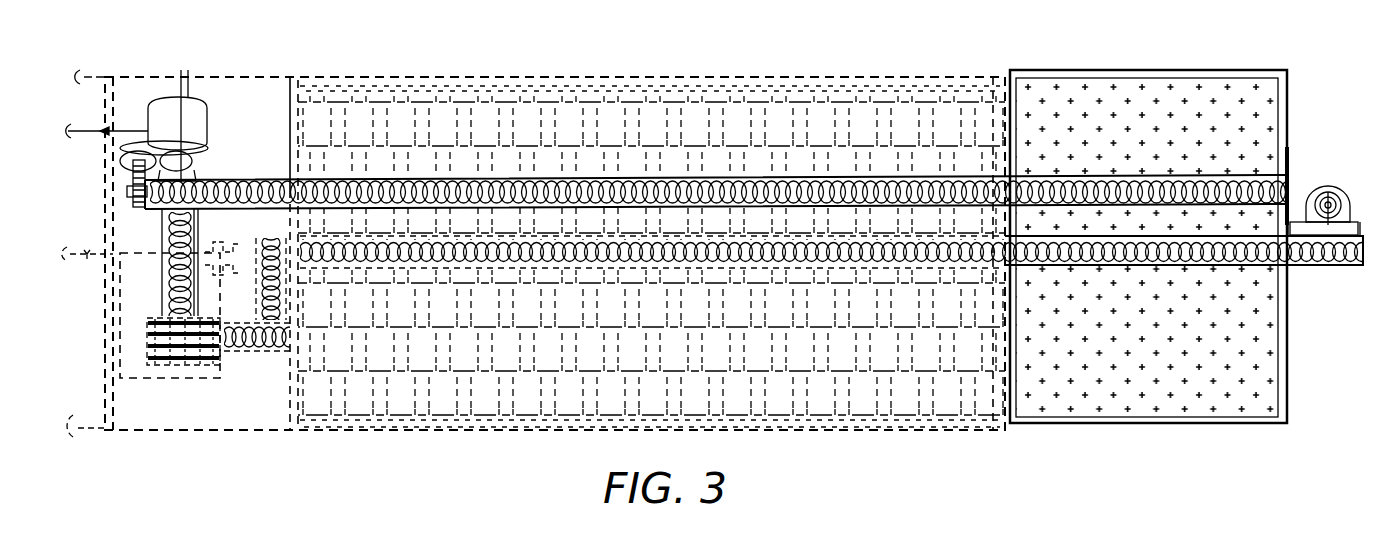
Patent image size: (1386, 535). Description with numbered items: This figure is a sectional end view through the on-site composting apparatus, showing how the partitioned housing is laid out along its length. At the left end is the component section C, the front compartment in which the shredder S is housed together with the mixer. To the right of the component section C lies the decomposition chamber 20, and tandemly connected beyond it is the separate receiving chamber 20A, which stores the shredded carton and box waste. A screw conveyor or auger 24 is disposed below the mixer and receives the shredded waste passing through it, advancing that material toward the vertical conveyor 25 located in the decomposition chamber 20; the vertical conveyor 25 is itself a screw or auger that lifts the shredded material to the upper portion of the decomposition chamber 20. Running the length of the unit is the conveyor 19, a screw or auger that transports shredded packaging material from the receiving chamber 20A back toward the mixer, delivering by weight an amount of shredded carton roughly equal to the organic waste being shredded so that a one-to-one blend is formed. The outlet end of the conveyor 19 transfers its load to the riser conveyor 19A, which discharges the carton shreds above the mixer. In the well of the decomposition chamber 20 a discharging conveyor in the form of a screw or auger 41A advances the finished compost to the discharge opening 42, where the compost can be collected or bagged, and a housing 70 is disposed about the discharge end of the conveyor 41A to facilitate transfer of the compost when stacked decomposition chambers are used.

The conveyor 19 is at (430, 188).
The riser conveyor 19A is at (210, 180).
The decomposition chamber 20 is at (853, 125).
The receiving chamber 20A is at (1140, 97).
The screw conveyor 24 is at (250, 368).
The vertical conveyor 25 is at (280, 300).
The discharging conveyor 41A is at (659, 262).
The discharge opening 42 is at (1318, 192).
The housing 70 is at (1352, 201).
The shredder S is at (184, 368).
The component section C is at (262, 426).